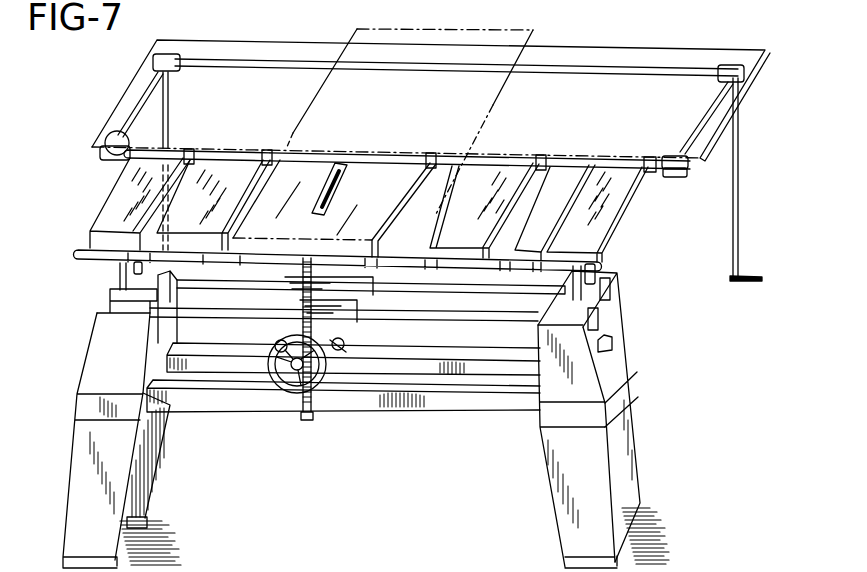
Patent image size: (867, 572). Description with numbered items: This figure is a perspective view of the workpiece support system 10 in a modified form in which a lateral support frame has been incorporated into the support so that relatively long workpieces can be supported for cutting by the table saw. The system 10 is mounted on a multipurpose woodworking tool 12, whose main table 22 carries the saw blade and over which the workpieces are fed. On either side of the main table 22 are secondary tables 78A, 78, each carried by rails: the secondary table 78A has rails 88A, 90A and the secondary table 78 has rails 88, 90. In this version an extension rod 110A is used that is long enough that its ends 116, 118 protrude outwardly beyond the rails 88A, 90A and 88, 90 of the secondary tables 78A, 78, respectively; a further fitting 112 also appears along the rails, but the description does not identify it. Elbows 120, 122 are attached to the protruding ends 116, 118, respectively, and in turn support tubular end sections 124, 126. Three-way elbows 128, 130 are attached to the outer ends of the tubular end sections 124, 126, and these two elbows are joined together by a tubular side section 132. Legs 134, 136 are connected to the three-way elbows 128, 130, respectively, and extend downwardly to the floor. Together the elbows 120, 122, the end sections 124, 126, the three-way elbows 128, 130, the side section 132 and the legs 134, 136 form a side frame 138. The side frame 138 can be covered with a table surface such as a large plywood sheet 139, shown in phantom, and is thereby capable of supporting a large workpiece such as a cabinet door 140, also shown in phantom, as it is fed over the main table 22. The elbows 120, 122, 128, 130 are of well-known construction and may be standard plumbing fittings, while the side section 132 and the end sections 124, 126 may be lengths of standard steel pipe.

The multipurpose woodworking tool 12 is at (658, 415).
The main table 22 is at (382, 183).
The secondary table 78 is at (618, 196).
The secondary table 78A is at (117, 200).
The rail 88 is at (642, 155).
The rail 88A is at (188, 150).
The rail 90 is at (562, 257).
The rail 90A is at (95, 258).
The extension rod 110A is at (545, 155).
The rail coupling 112 is at (507, 257).
The end of extension rod 116 is at (114, 130).
The end of extension rod 118 is at (660, 156).
The elbow 120 is at (101, 152).
The elbow 122 is at (679, 176).
The tubular end section 124 is at (140, 90).
The tubular end section 126 is at (718, 97).
The three-way elbow 128 is at (165, 54).
The three-way elbow 130 is at (727, 64).
The tubular side section 132 is at (256, 40).
The leg 134 is at (168, 104).
The leg 136 is at (737, 148).
The side frame 138 is at (600, 45).
The plywood sheet 139 is at (346, 28).
The cabinet door 140 is at (532, 32).
The workpiece support system 10 is at (614, 248).